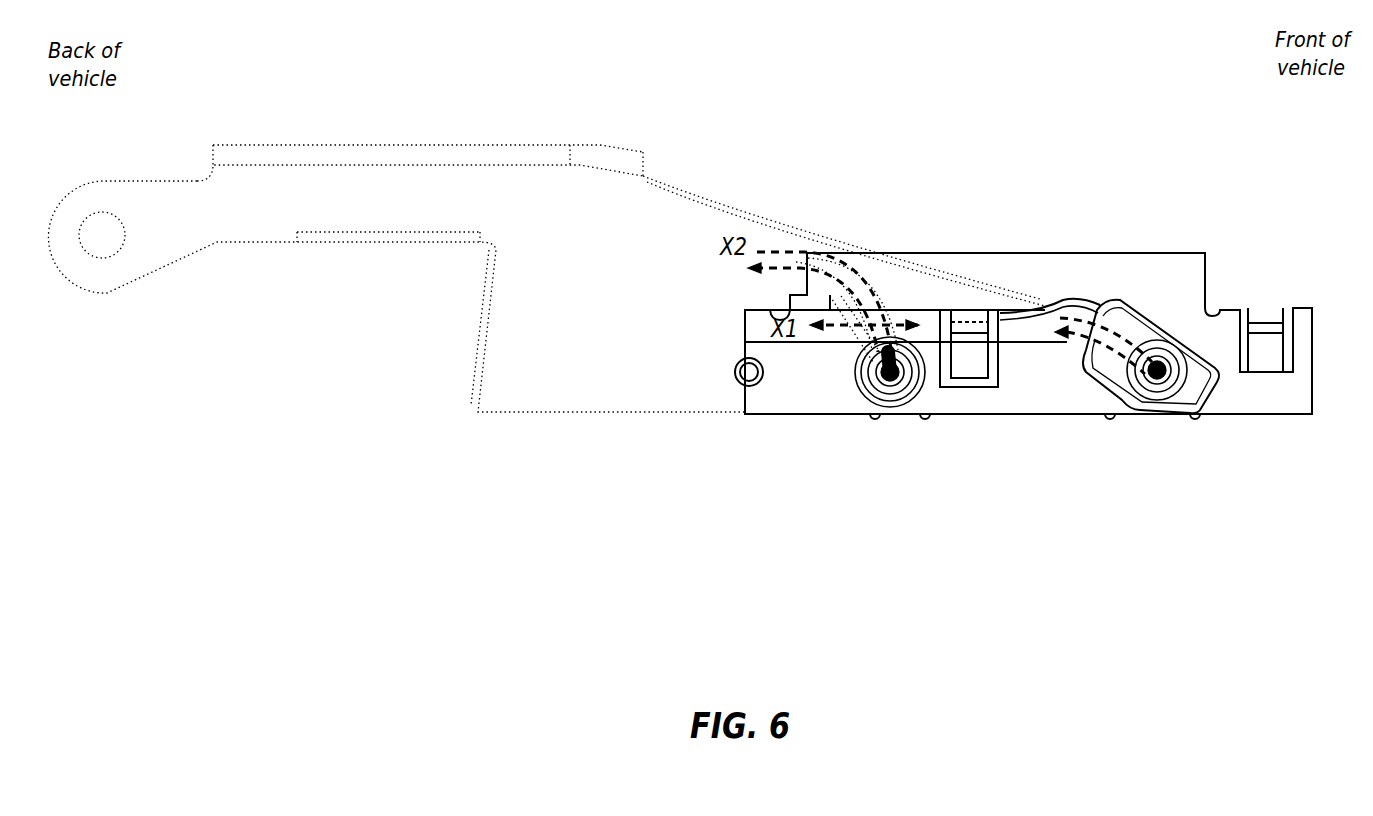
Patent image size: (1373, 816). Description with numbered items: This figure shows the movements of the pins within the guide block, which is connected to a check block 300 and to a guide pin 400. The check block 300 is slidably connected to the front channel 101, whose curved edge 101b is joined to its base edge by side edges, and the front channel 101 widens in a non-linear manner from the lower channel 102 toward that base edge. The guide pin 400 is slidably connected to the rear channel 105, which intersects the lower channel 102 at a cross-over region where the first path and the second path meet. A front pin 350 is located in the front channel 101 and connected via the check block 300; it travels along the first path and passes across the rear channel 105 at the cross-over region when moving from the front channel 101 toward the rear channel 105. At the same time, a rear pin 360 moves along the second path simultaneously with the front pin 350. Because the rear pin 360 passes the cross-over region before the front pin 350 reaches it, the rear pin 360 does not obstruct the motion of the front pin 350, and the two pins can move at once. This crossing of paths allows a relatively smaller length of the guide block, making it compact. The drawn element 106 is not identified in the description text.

The front channel 101 is at (1070, 300).
The curved edge 101b is at (1088, 300).
The lower channel 102 is at (1022, 333).
The rear channel 105 is at (852, 347).
The cable 106 is at (822, 285).
The check block 300 is at (1143, 307).
The front pin 350 is at (1147, 390).
The rear pin 360 is at (870, 403).
The guide pin 400 is at (903, 413).